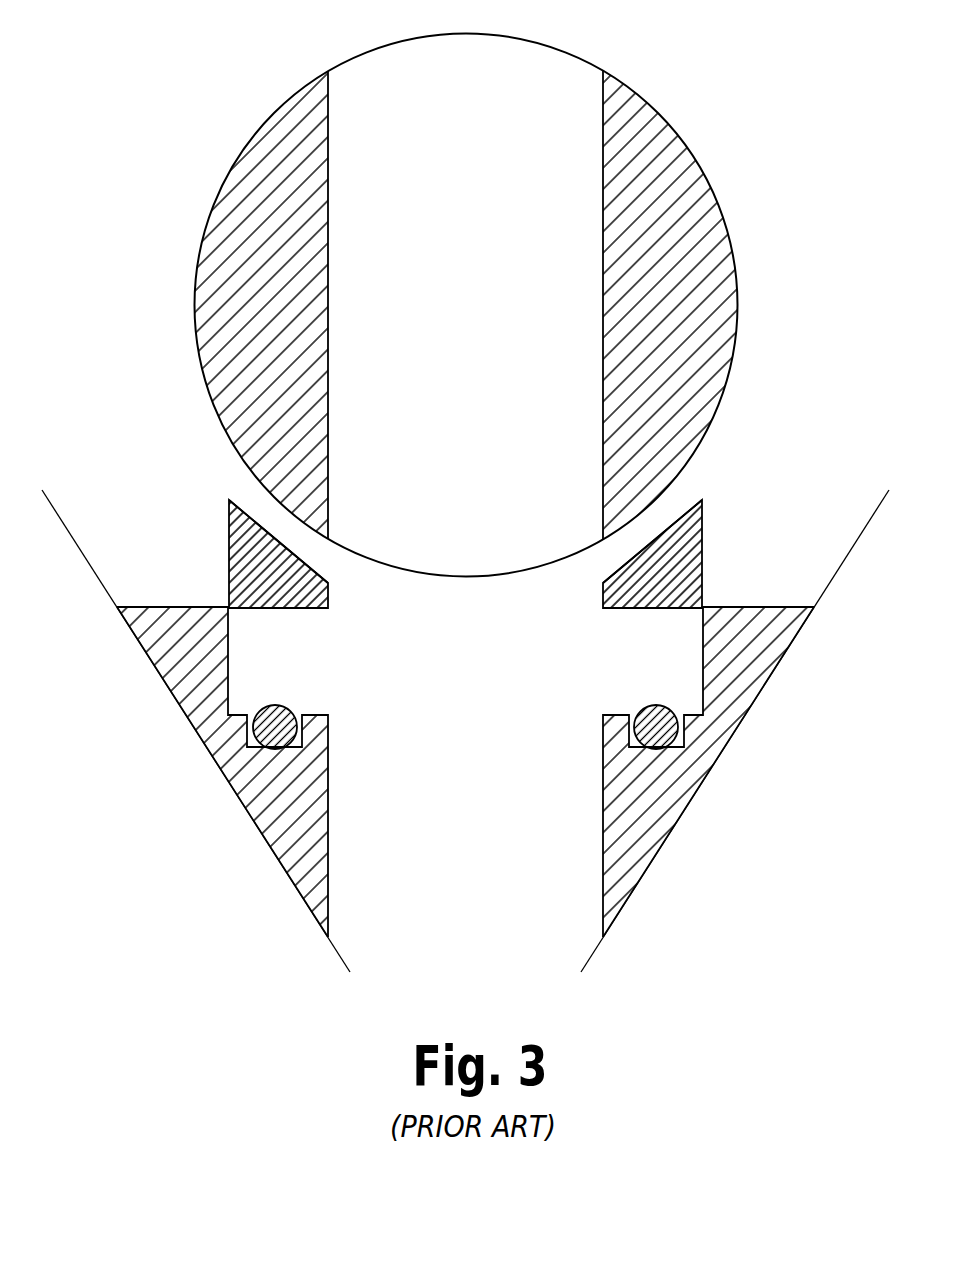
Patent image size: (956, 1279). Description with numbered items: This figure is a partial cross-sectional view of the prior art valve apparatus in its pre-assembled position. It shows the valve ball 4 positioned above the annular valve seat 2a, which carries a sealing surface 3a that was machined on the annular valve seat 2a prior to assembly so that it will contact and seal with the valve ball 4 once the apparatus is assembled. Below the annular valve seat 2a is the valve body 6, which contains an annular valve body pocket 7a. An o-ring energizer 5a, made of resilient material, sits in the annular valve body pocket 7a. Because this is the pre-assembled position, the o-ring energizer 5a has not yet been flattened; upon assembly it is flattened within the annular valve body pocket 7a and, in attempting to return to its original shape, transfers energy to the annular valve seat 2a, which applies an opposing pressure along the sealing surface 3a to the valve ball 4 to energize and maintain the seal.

The valve ball 4 is at (695, 220).
The annular valve seat 2a is at (229, 553).
The sealing surface 3a is at (296, 548).
The valve body 6 is at (177, 633).
The o-ring energizer 5a is at (201, 746).
The annular valve body pocket 7a is at (257, 750).